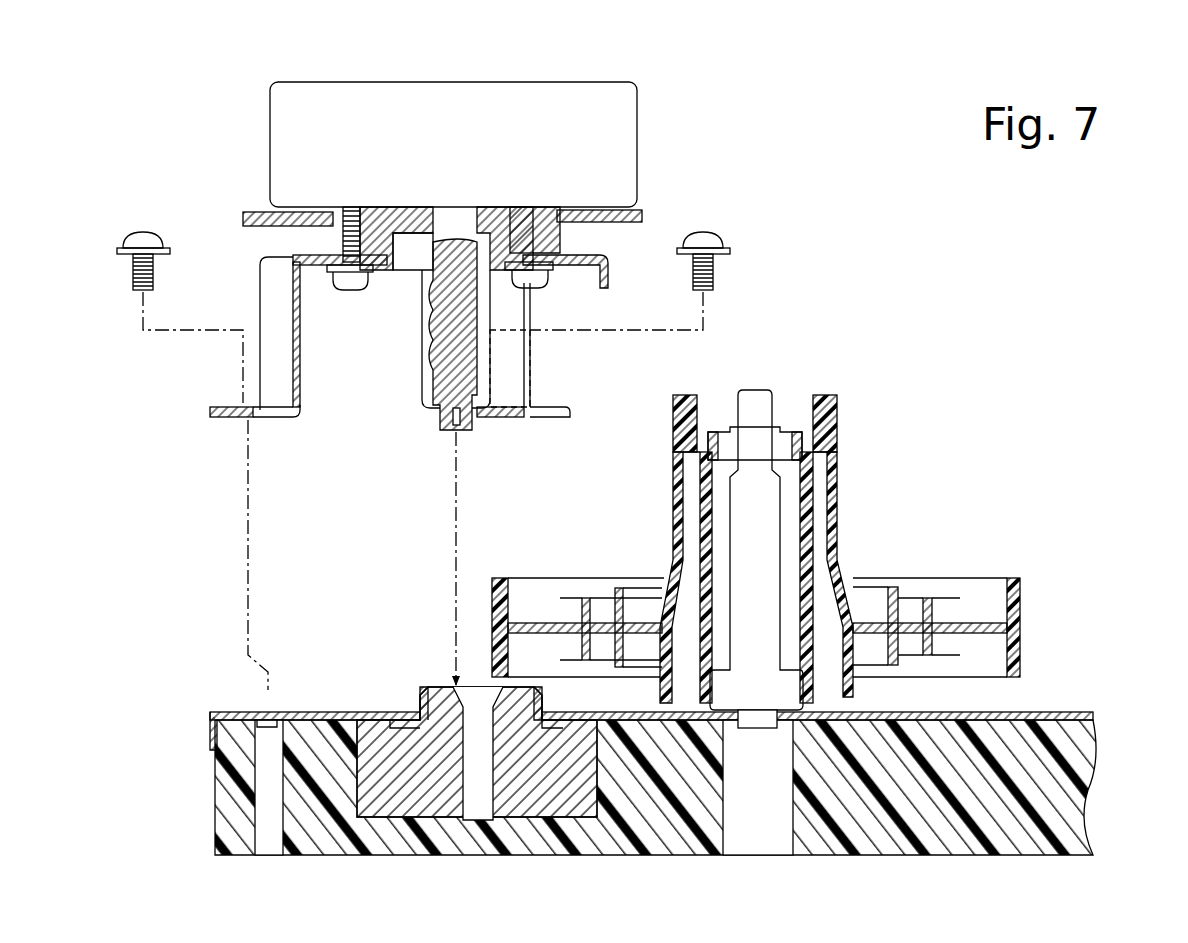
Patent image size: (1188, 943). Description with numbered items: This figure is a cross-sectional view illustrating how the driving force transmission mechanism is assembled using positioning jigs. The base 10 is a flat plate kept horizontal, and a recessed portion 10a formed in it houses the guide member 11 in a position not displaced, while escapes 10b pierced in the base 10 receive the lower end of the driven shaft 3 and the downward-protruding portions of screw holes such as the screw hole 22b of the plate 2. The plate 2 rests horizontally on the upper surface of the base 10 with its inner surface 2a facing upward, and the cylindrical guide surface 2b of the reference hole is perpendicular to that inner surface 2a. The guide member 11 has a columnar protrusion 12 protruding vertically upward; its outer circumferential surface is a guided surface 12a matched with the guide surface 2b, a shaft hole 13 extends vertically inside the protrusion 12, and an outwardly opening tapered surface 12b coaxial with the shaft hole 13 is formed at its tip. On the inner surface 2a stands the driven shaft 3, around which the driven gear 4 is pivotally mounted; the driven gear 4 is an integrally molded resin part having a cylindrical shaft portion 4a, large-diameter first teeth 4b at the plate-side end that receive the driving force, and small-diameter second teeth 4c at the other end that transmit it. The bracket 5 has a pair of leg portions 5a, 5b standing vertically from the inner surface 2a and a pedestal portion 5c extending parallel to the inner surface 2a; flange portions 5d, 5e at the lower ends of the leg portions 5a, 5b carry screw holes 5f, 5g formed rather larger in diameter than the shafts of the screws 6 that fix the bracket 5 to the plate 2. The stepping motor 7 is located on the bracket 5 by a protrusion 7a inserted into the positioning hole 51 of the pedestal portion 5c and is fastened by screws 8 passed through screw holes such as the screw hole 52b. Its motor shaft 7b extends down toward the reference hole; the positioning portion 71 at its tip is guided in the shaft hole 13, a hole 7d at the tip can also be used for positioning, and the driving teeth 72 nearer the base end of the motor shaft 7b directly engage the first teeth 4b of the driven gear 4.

The plate 2 is at (652, 696).
The inner surface 2a is at (1045, 712).
The guide surface 2b is at (420, 698).
The driven shaft 3 is at (753, 397).
The driven gear 4 is at (788, 534).
The shaft portion 4a is at (838, 497).
The first teeth 4b is at (1022, 603).
The second teeth 4c is at (835, 422).
The bracket 5 is at (430, 346).
The leg portion 5a is at (270, 313).
The leg portion 5b is at (527, 315).
The pedestal portion 5c is at (600, 258).
The flange portion 5d is at (226, 407).
The flange portion 5e is at (549, 407).
The screw hole 5f is at (266, 418).
The screw hole 5g is at (500, 417).
The screw 6 is at (141, 240).
The stepping motor 7 is at (453, 264).
The protrusion 7a is at (388, 262).
The motor shaft 7b is at (413, 366).
The hole 7d is at (461, 428).
The screw 8 is at (355, 283).
The base 10 is at (687, 814).
The recessed portion 10a is at (562, 808).
The escape 10b is at (262, 845).
The guide member 11 is at (407, 812).
The protrusion 12 is at (481, 715).
The guided surface 12a is at (542, 710).
The tapered surface 12b is at (462, 688).
The shaft hole 13 is at (480, 822).
The screw hole 22b is at (268, 712).
The positioning hole 51 is at (520, 207).
The screw hole 52b is at (333, 212).
The positioning portion 71 is at (452, 428).
The driving teeth 72 is at (436, 370).